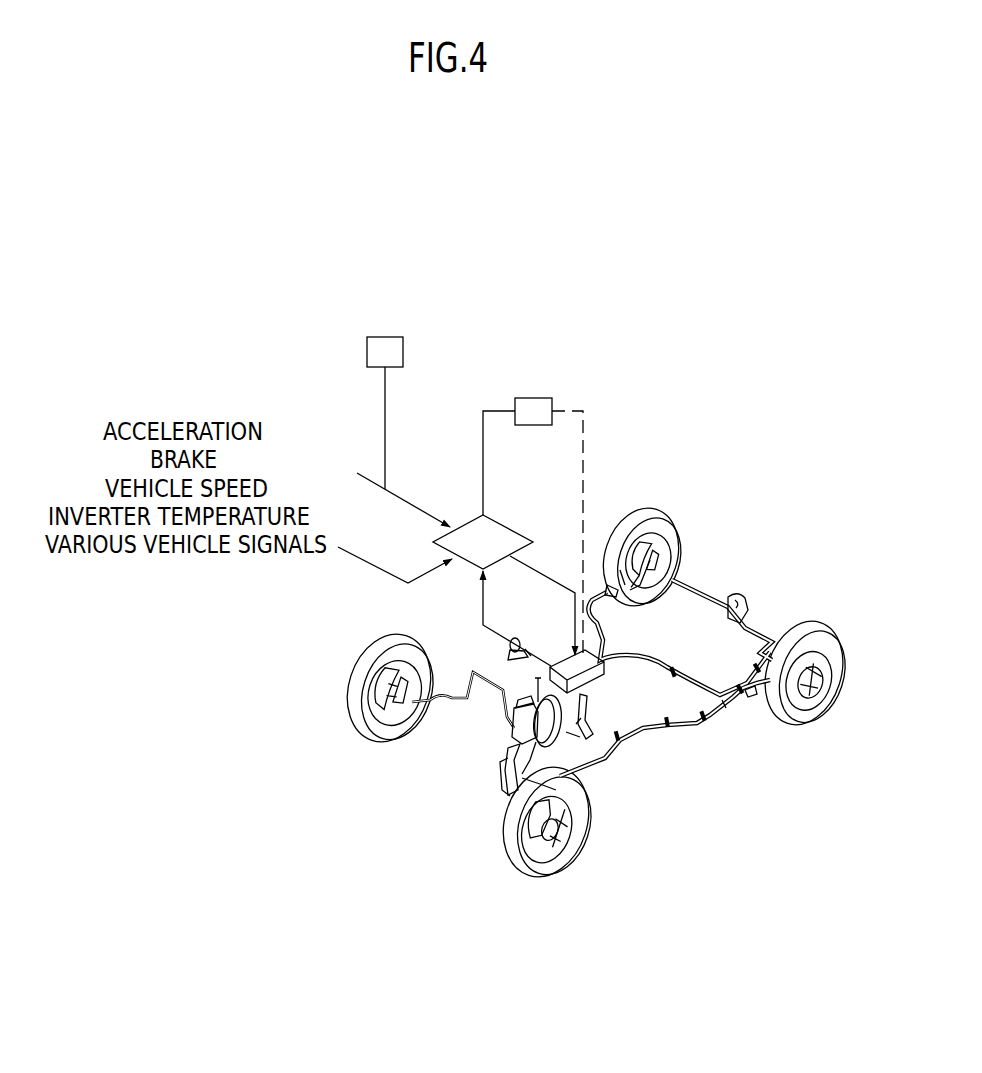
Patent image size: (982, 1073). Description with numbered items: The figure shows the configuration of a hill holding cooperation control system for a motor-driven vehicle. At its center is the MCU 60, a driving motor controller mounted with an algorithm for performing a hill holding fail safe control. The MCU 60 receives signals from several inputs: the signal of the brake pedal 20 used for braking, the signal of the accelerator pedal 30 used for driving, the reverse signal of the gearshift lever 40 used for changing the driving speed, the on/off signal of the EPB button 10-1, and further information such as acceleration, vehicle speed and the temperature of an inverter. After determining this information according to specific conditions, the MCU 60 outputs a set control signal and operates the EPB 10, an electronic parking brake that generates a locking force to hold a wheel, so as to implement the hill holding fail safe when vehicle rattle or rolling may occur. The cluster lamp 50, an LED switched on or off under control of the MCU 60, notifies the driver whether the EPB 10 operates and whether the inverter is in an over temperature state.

The EPB 10 is at (611, 697).
The EPB button 10-1 is at (532, 398).
The brake pedal 20 is at (585, 702).
The accelerator pedal 30 is at (503, 780).
The gearshift lever 40 is at (511, 656).
The cluster lamp 50 is at (385, 337).
The MCU 60 is at (465, 563).